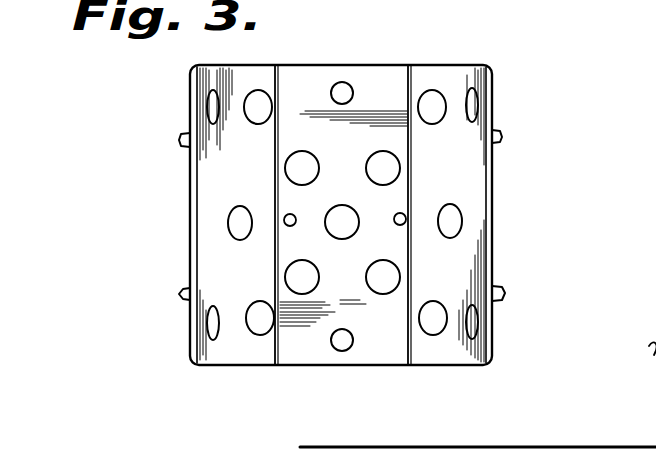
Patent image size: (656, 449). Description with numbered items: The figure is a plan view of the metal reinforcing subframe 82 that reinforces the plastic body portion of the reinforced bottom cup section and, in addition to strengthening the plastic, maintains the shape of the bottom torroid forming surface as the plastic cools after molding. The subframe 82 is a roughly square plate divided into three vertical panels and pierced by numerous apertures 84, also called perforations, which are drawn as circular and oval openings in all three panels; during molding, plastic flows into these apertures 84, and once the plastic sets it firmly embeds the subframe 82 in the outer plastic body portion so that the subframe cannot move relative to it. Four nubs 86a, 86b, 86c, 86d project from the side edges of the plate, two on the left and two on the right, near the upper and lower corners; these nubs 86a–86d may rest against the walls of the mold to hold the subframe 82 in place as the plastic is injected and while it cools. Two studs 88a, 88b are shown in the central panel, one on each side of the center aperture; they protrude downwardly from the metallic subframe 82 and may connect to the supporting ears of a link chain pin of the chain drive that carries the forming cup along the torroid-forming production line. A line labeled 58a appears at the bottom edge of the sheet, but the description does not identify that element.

The metal reinforcing subframe 82 is at (170, 238).
The aperture 84 is at (262, 323).
The nub 86a is at (181, 137).
The nub 86b is at (181, 295).
The nub 86c is at (504, 293).
The nub 86d is at (500, 135).
The stud 88a is at (285, 218).
The stud 88b is at (404, 216).
The housing wall 58a is at (545, 448).